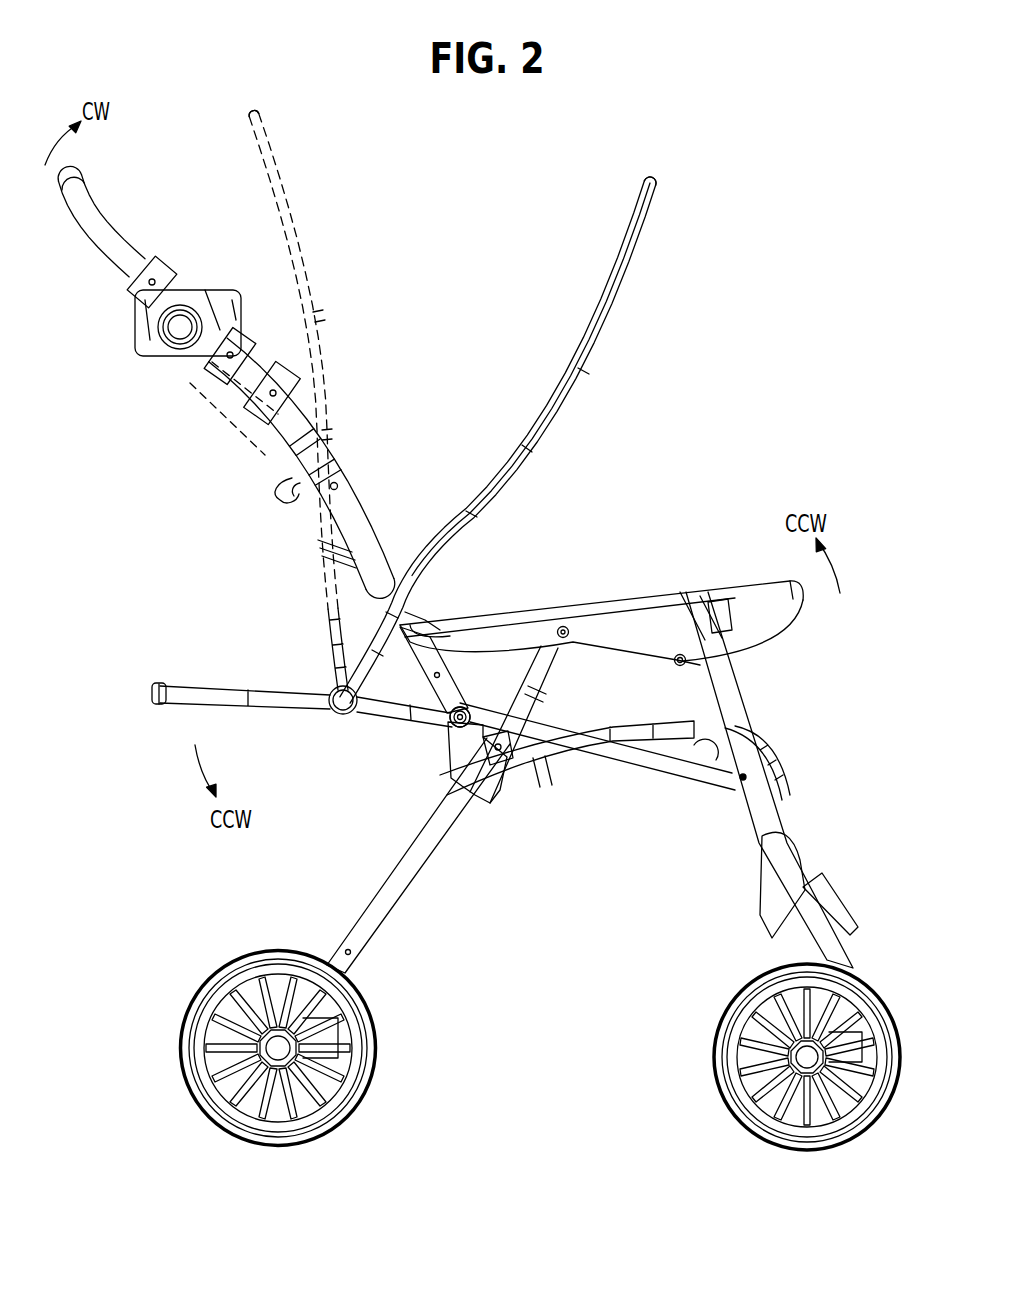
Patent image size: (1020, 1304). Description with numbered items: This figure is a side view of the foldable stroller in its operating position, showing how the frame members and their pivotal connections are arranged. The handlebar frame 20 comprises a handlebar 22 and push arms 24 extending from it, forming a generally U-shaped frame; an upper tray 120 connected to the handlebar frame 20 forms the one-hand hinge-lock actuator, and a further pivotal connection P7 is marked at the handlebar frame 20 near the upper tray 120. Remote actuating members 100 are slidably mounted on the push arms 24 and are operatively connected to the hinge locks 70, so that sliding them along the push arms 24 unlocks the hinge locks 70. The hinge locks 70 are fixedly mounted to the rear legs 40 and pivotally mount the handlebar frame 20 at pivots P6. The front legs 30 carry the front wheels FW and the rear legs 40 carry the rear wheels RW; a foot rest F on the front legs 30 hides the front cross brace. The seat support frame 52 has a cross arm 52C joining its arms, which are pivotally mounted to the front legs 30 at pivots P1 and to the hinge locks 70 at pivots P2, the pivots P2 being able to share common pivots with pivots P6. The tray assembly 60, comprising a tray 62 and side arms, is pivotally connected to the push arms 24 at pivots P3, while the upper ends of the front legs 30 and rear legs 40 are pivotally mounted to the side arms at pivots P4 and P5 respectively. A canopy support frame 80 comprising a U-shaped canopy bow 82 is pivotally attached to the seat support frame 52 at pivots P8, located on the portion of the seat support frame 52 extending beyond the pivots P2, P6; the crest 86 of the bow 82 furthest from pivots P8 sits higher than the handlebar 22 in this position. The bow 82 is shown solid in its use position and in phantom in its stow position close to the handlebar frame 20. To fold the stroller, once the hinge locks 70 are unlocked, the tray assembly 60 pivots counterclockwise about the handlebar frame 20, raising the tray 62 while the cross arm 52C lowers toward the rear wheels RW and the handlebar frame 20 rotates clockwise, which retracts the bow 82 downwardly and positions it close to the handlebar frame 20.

The handlebar frame 20 is at (294, 334).
The handlebar 22 is at (83, 210).
The push arms 24 is at (279, 476).
The front legs 30 is at (753, 815).
The rear legs 40 is at (422, 858).
The seat support frame 52 is at (268, 690).
The cross arm 52C is at (168, 705).
The tray assembly 60 is at (616, 589).
The tray 62 is at (805, 601).
The hinge locks 70 is at (490, 781).
The canopy support frame 80 is at (590, 393).
The canopy bow 82 is at (300, 204).
The crest 86 is at (256, 106).
The remote actuating members 100 is at (292, 380).
The upper tray 120 is at (204, 282).
The pivots P1 is at (731, 785).
The pivots P2 is at (447, 733).
The pivots P3 is at (420, 603).
The pivots P4 is at (572, 647).
The pivots P5 is at (700, 665).
The pivots P6 is at (460, 717).
The pivot P7 is at (172, 340).
The pivots P8 is at (331, 713).
The foot rest F is at (805, 872).
The rear wheels RW is at (378, 1052).
The front wheels FW is at (722, 1077).